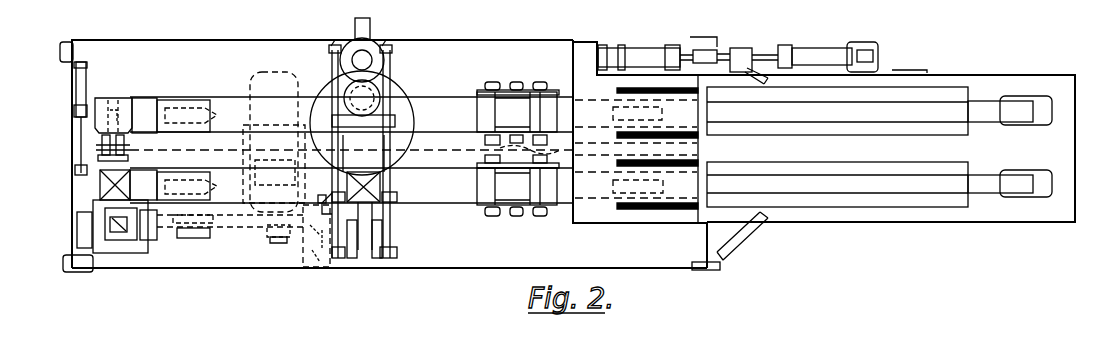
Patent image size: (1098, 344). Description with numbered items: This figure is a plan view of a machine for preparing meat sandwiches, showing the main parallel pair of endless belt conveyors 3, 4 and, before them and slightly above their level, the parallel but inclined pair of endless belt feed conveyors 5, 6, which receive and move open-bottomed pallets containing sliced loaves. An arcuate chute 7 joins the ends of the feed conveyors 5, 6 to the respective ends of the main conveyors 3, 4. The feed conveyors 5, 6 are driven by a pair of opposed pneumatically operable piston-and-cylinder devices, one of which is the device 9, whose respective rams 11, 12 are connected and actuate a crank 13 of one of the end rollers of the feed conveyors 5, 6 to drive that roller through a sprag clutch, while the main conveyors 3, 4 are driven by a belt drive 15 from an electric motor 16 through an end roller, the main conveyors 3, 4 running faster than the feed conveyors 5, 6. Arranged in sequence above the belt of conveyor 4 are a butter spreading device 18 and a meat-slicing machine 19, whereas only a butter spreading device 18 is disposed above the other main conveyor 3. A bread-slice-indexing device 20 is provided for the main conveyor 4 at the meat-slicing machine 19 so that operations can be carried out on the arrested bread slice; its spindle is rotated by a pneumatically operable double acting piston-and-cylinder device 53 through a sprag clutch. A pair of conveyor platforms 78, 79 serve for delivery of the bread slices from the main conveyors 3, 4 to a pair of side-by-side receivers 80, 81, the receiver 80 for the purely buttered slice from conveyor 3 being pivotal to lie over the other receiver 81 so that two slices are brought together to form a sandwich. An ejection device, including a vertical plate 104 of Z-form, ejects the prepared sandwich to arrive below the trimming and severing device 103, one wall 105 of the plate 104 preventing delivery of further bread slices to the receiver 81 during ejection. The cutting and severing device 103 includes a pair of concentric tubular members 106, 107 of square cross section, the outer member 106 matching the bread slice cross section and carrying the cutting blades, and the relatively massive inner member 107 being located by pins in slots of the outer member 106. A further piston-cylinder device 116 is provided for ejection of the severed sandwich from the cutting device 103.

The endless belt conveyor 3 is at (446, 112).
The endless belt conveyor 4 is at (446, 190).
The endless belt feed conveyor 5 is at (930, 112).
The endless belt feed conveyor 6 is at (931, 182).
The arcuate chute 7 is at (662, 237).
The pneumatically operable piston-and-cylinder device 9 is at (638, 55).
The ram 11 is at (690, 50).
The ram 12 is at (765, 52).
The crank 13 is at (726, 52).
The belt drive 15 is at (252, 228).
The electric motor 16 is at (245, 152).
The butter spreading device 18 is at (518, 74).
The meat-slicing machine 19 is at (403, 76).
The bread-slice-indexing device 20 is at (332, 196).
The pneumatically operable double acting piston-and-cylinder device 53 is at (314, 268).
The conveyor platform 78 is at (142, 104).
The conveyor platform 79 is at (140, 178).
The receiver 80 is at (113, 100).
The receiver 81 is at (100, 198).
The trimming and severing device 103 is at (136, 247).
The vertical plate 104 is at (100, 172).
The wall 105 is at (125, 165).
The outer tubular member 106 is at (118, 240).
The inner tubular member 107 is at (78, 228).
The piston-cylinder device 116 is at (168, 232).